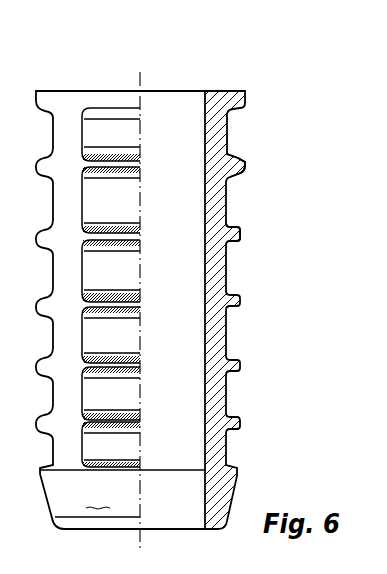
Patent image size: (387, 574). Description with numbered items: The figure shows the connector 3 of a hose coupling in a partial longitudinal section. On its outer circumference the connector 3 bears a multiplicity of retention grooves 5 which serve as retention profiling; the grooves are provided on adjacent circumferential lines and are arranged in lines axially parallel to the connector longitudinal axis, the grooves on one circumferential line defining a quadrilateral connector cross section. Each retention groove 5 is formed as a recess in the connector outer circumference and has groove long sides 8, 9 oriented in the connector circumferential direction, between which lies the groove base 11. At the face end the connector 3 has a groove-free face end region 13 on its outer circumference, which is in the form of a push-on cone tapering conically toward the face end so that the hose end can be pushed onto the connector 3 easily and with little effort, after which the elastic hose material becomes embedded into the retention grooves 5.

The connector 3 is at (265, 289).
The retention groove 5 is at (261, 217).
The groove long side 8 is at (245, 171).
The groove long side 9 is at (240, 236).
The groove base 11 is at (233, 203).
The groove-free face end region 13 is at (259, 458).